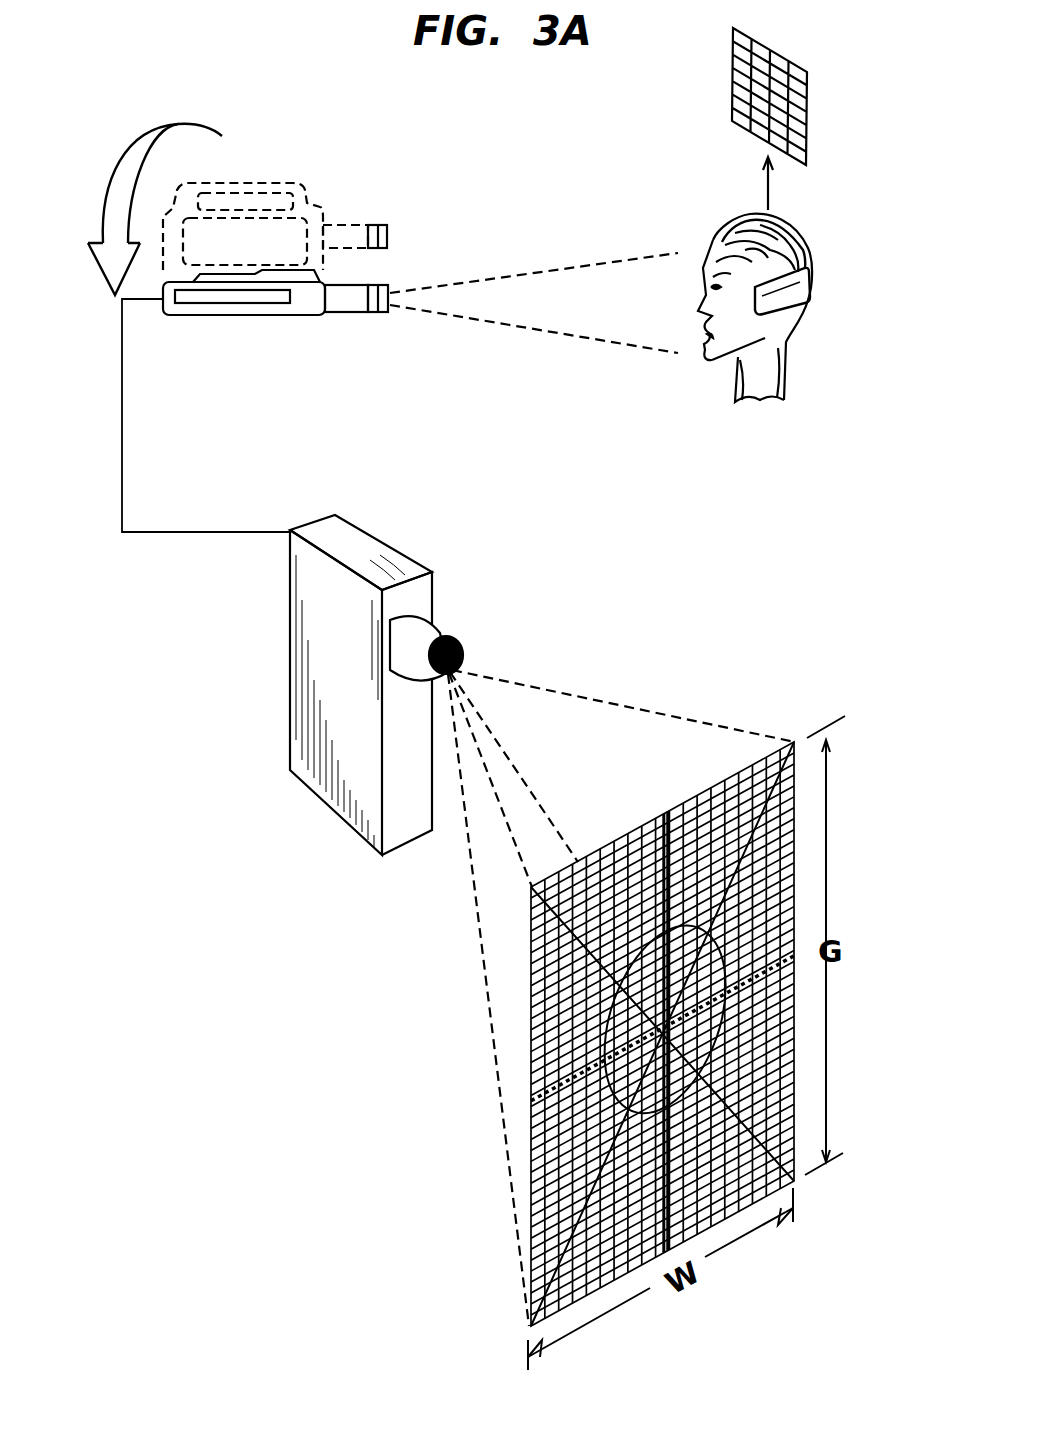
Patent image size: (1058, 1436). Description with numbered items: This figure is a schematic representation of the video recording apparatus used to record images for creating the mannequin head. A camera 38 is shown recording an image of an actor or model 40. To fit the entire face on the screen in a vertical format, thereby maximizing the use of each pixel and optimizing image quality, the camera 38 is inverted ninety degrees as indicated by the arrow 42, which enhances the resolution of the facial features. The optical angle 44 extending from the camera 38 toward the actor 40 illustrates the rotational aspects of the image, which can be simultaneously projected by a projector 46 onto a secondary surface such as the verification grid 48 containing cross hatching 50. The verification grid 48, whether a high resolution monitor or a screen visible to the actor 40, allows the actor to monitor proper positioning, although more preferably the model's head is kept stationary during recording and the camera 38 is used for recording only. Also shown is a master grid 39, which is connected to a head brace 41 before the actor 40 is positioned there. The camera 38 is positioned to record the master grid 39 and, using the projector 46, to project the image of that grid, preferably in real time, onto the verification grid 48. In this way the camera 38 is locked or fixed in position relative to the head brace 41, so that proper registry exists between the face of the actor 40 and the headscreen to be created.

The camera 38 is at (293, 170).
The master grid 39 is at (773, 50).
The actor or model 40 is at (790, 345).
The head brace 41 is at (810, 271).
The arrow 42 is at (142, 209).
The optical angle 44 is at (467, 283).
The projector 46 is at (427, 563).
The verification grid 48 is at (795, 742).
The cross hatching 50 is at (793, 812).